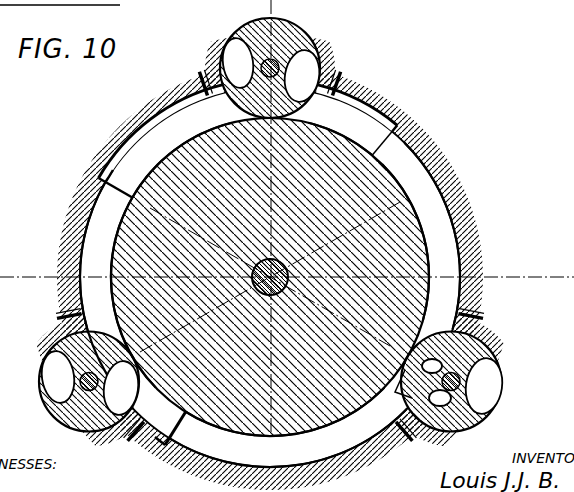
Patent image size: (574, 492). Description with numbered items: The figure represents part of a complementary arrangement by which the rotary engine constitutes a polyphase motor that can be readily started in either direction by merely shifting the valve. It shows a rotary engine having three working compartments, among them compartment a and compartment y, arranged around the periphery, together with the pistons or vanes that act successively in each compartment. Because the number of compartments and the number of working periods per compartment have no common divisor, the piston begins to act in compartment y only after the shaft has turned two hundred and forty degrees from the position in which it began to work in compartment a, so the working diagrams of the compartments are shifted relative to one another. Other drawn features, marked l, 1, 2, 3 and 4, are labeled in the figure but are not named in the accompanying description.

The valve slots l is at (203, 70).
The chamber 1 is at (165, 141).
The chamber 2 is at (353, 123).
The chamber 3 is at (383, 404).
The chamber 4 is at (193, 437).
The compartment a is at (118, 295).
The compartment y is at (421, 236).